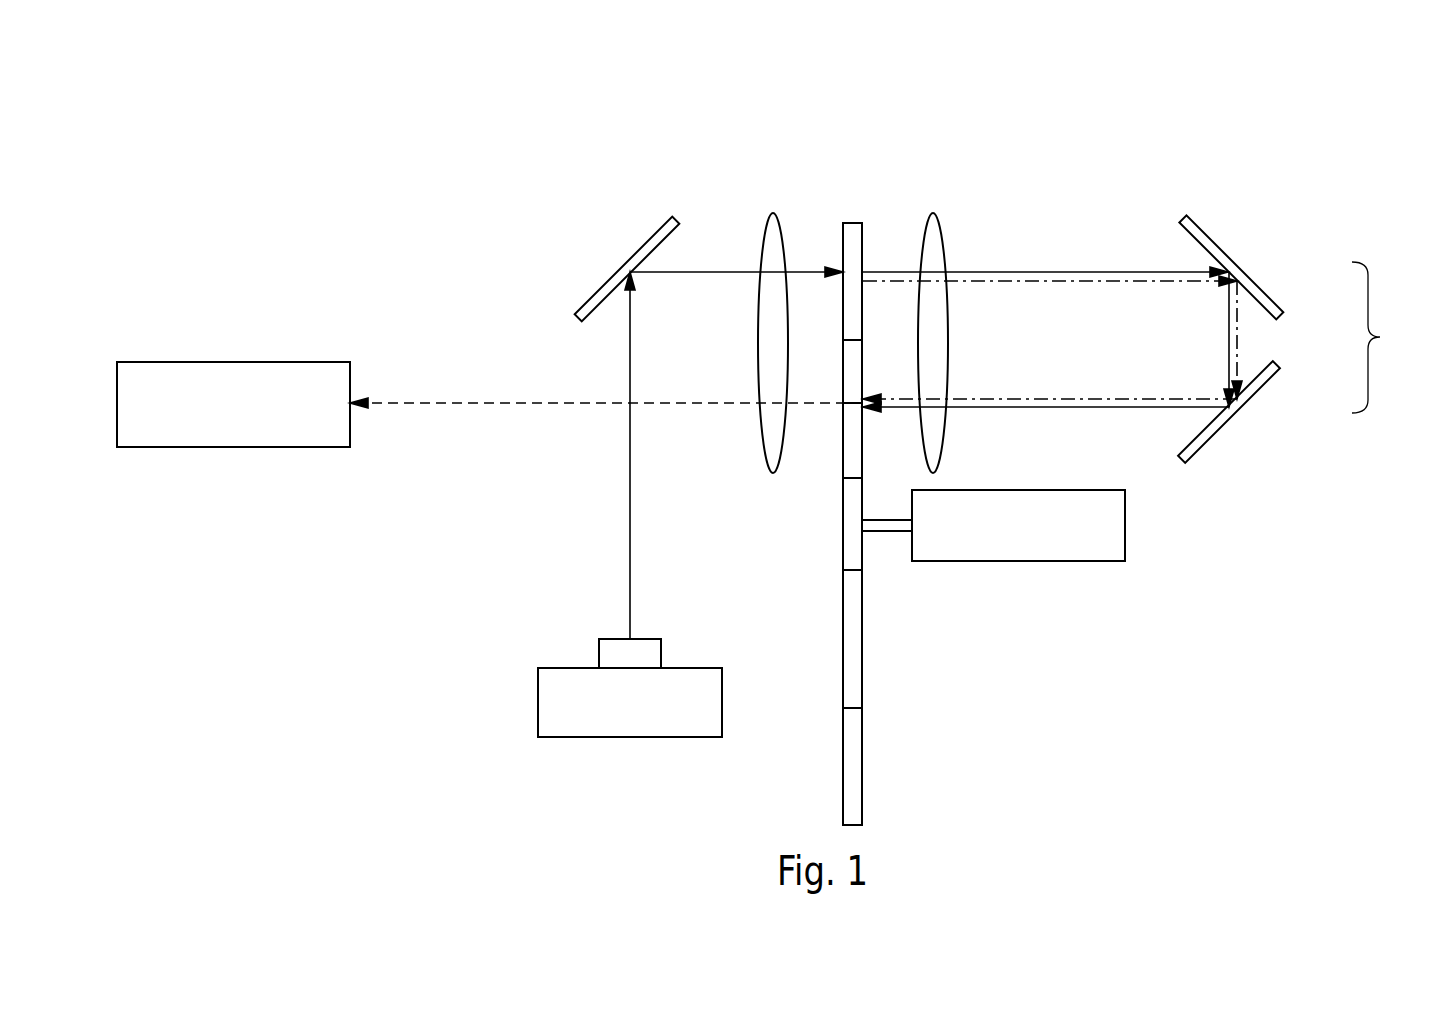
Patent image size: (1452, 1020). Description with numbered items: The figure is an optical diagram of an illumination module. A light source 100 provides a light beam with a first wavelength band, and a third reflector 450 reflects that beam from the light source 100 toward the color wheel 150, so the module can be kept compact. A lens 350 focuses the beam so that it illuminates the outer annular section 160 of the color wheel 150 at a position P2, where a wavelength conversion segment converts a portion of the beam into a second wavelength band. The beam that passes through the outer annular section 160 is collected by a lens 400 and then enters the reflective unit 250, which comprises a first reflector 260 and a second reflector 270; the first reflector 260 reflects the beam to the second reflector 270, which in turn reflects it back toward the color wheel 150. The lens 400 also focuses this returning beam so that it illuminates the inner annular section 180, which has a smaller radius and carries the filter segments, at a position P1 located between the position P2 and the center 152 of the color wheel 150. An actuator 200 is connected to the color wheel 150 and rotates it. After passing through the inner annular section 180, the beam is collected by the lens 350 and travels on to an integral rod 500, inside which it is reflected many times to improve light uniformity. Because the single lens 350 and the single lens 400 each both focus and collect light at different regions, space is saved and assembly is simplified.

The light source 100 is at (555, 703).
The color wheel 150 is at (858, 660).
The center of the color wheel 152 is at (828, 542).
The outer annular section 160 is at (858, 226).
The inner annular section 180 is at (834, 449).
The actuator 200 is at (1115, 532).
The reflective unit 250 is at (1303, 339).
The first reflector 260 is at (1228, 275).
The second reflector 270 is at (1250, 393).
The lens 350 is at (780, 215).
The lens 400 is at (938, 215).
The third reflector 450 is at (623, 267).
The integral rod 500 is at (234, 389).
The position P1 is at (876, 420).
The position P2 is at (830, 255).